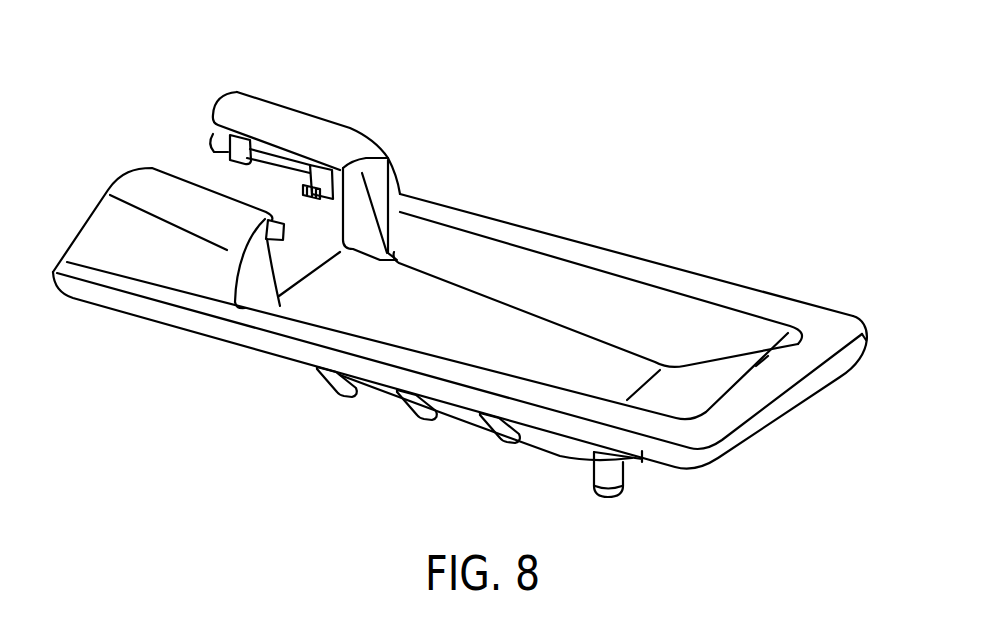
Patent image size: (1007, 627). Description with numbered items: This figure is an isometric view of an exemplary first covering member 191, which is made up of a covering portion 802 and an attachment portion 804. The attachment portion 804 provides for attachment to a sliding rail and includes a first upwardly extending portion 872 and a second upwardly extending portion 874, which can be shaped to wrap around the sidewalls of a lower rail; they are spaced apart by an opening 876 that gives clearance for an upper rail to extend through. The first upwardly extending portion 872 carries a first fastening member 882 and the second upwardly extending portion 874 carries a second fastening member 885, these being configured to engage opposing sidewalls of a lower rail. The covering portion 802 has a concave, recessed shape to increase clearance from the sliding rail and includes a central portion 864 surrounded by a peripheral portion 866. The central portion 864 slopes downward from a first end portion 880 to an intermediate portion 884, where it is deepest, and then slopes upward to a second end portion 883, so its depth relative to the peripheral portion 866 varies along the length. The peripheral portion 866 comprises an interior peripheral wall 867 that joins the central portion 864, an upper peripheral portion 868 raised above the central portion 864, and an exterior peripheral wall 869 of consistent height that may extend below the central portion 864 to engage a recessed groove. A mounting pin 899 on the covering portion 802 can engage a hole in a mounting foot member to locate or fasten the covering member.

The covering portion 802 is at (741, 286).
The attachment portion 804 is at (360, 89).
The first covering member 191 is at (601, 183).
The central portion 864 is at (496, 308).
The peripheral portion 866 is at (842, 323).
The interior peripheral wall 867 is at (618, 285).
The upper peripheral portion 868 is at (707, 280).
The exterior peripheral wall 869 is at (451, 396).
The first upwardly extending portion 872 is at (350, 127).
The second upwardly extending portion 874 is at (150, 270).
The opening 876 is at (306, 227).
The first end portion 880 is at (306, 303).
The first fastening member 882 is at (316, 163).
The second end portion 883 is at (772, 364).
The intermediate portion 884 is at (647, 380).
The second fastening member 885 is at (281, 239).
The mounting pin 899 is at (620, 478).